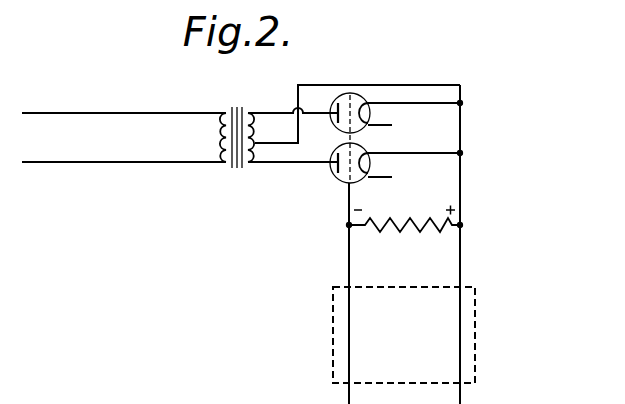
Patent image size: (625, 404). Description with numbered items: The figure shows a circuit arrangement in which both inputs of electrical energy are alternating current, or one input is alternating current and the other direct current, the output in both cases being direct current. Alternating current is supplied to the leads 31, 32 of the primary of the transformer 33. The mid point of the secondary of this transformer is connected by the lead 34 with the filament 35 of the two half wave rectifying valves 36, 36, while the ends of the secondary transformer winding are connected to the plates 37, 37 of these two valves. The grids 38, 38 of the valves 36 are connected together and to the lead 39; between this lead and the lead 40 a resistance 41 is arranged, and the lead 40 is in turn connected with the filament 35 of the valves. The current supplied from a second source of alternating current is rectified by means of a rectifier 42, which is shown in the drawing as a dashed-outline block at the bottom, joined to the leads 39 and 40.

The lead of the transformer primary 31 is at (111, 112).
The lead of the transformer primary 32 is at (113, 162).
The transformer 33 is at (238, 107).
The lead 34 is at (290, 118).
The filament 35 is at (365, 97).
The half wave rectifying valve 36 is at (342, 97).
The plate 37 is at (337, 122).
The grid 38 is at (355, 148).
The lead 39 is at (348, 213).
The lead 40 is at (462, 187).
The resistance 41 is at (408, 233).
The rectifier 42 is at (404, 335).